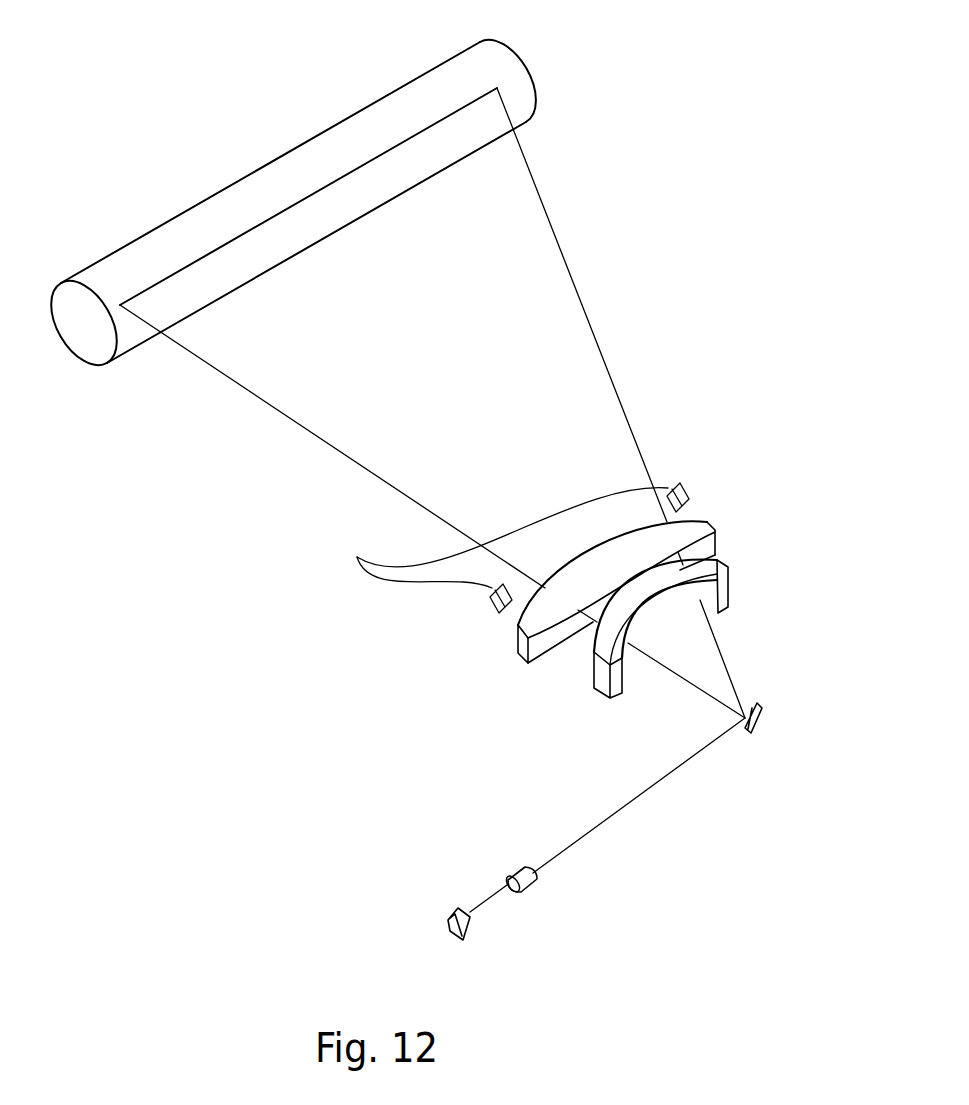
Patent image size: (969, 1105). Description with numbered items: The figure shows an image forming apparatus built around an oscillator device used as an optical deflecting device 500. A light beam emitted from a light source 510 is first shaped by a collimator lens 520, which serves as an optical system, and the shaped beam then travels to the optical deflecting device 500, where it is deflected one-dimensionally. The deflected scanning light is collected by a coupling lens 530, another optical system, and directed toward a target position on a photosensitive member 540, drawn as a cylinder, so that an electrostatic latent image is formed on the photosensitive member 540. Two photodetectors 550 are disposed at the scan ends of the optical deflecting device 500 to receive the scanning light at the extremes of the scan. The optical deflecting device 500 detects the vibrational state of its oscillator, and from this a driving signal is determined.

The optical deflecting device 500 is at (762, 713).
The light source 510 is at (470, 930).
The collimator lens 520 is at (537, 882).
The coupling lens 530 is at (718, 507).
The photosensitive member 540 is at (527, 107).
The photodetectors 550 is at (509, 548).